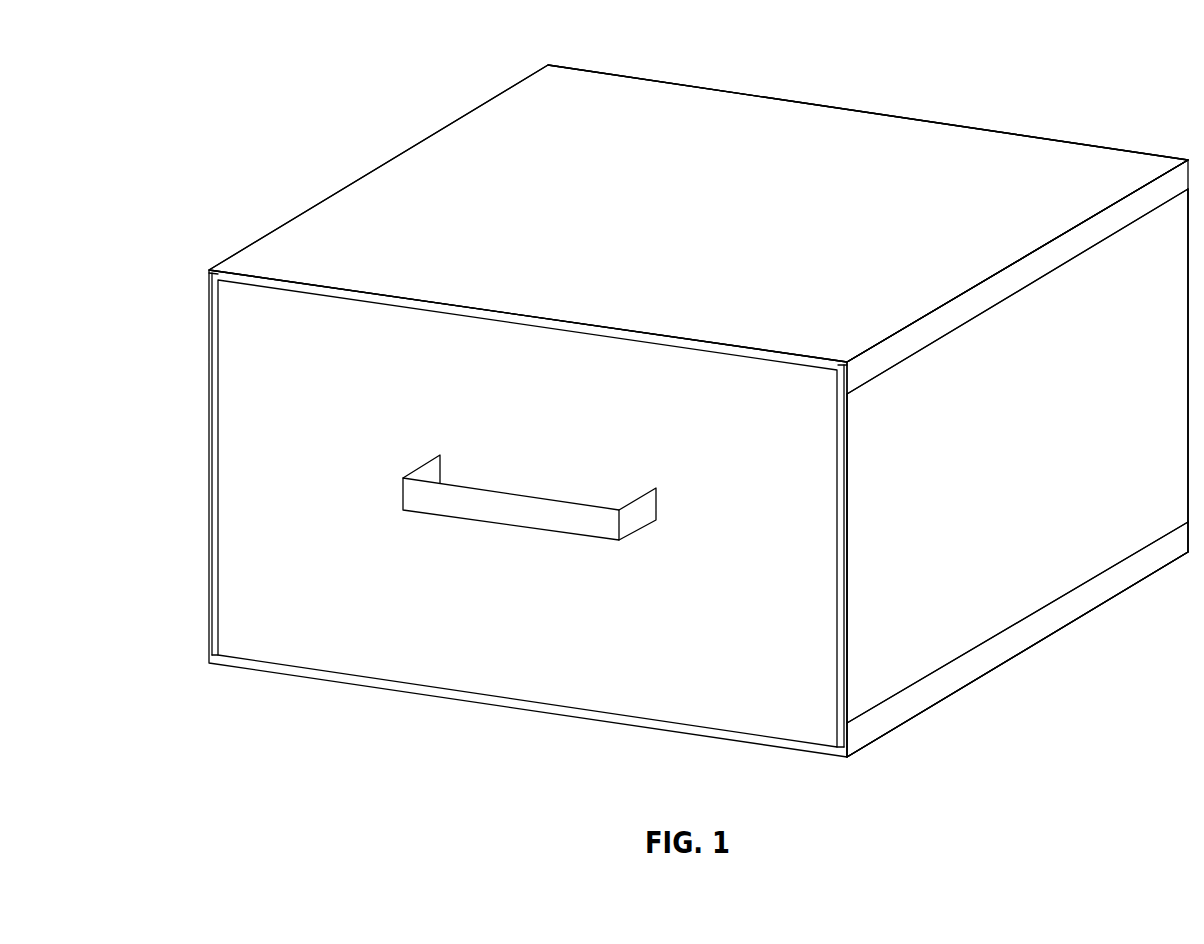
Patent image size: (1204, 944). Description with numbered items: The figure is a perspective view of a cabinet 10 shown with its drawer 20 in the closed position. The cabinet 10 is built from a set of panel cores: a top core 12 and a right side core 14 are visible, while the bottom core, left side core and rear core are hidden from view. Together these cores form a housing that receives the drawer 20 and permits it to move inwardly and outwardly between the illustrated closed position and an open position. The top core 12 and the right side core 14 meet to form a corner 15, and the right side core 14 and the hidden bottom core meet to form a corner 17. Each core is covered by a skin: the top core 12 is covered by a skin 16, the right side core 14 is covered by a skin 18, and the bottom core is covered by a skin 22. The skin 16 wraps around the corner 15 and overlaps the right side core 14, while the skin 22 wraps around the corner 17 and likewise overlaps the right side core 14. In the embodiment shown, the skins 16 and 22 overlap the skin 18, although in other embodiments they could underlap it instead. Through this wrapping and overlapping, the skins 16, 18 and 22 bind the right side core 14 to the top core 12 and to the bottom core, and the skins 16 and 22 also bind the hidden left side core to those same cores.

The cabinet 10 is at (302, 76).
The top core 12 is at (766, 118).
The right side core 14 is at (1008, 580).
The corner 15 is at (1000, 271).
The skin 16 is at (906, 140).
The corner 17 is at (1015, 655).
The skin 18 is at (1070, 545).
The drawer 20 is at (722, 705).
The skin 22 is at (918, 697).